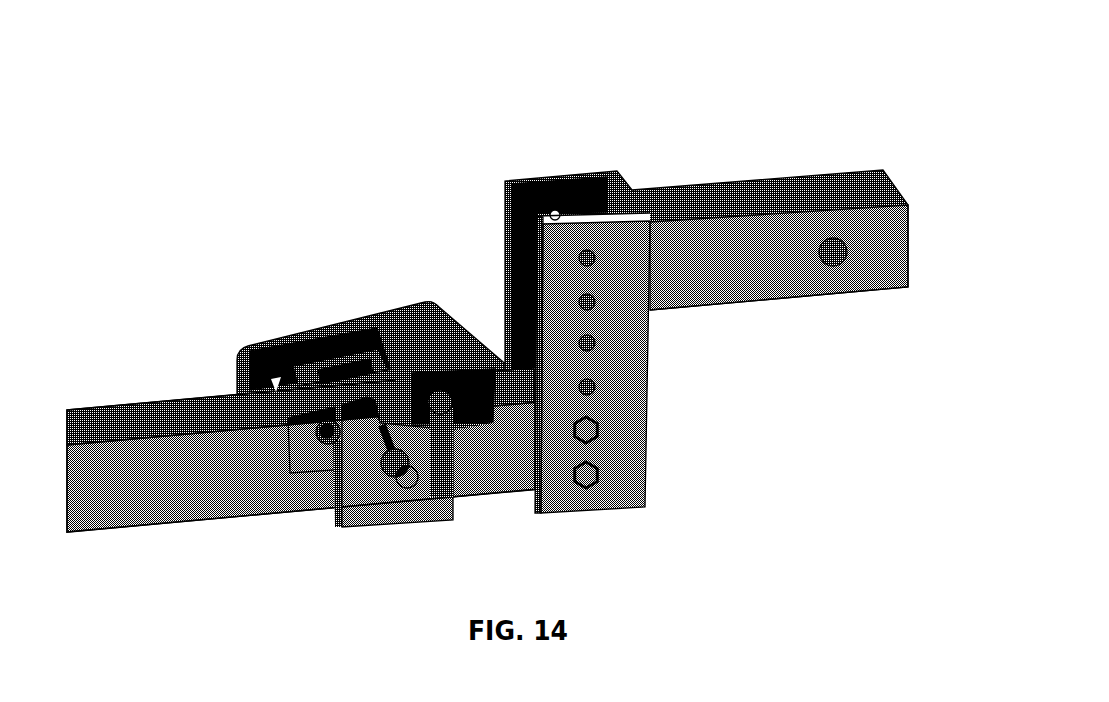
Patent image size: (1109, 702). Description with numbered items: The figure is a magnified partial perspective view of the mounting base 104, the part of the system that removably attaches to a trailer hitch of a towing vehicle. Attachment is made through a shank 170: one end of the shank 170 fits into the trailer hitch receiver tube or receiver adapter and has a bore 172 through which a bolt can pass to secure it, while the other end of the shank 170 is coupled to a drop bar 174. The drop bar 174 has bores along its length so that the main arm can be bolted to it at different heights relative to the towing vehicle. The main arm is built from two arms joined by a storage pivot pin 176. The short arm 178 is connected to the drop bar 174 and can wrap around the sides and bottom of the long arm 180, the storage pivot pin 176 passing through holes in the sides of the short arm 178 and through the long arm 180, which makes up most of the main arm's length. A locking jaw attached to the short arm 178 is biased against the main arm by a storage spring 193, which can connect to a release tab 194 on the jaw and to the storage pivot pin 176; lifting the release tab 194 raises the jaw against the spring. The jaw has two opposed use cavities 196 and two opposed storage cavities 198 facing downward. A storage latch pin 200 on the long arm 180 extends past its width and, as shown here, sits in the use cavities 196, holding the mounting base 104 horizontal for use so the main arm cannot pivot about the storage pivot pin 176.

The mounting base 104 is at (725, 147).
The shank 170 is at (780, 177).
The bore 172 is at (837, 266).
The drop bar 174 is at (649, 409).
The storage pivot pin 176 is at (413, 485).
The short arm 178 is at (511, 494).
The long arm 180 is at (173, 528).
The storage spring 193 is at (378, 436).
The release tab 194 is at (425, 318).
The use cavities 196 is at (330, 446).
The storage cavities 198 is at (445, 470).
The storage latch pin 200 is at (325, 468).